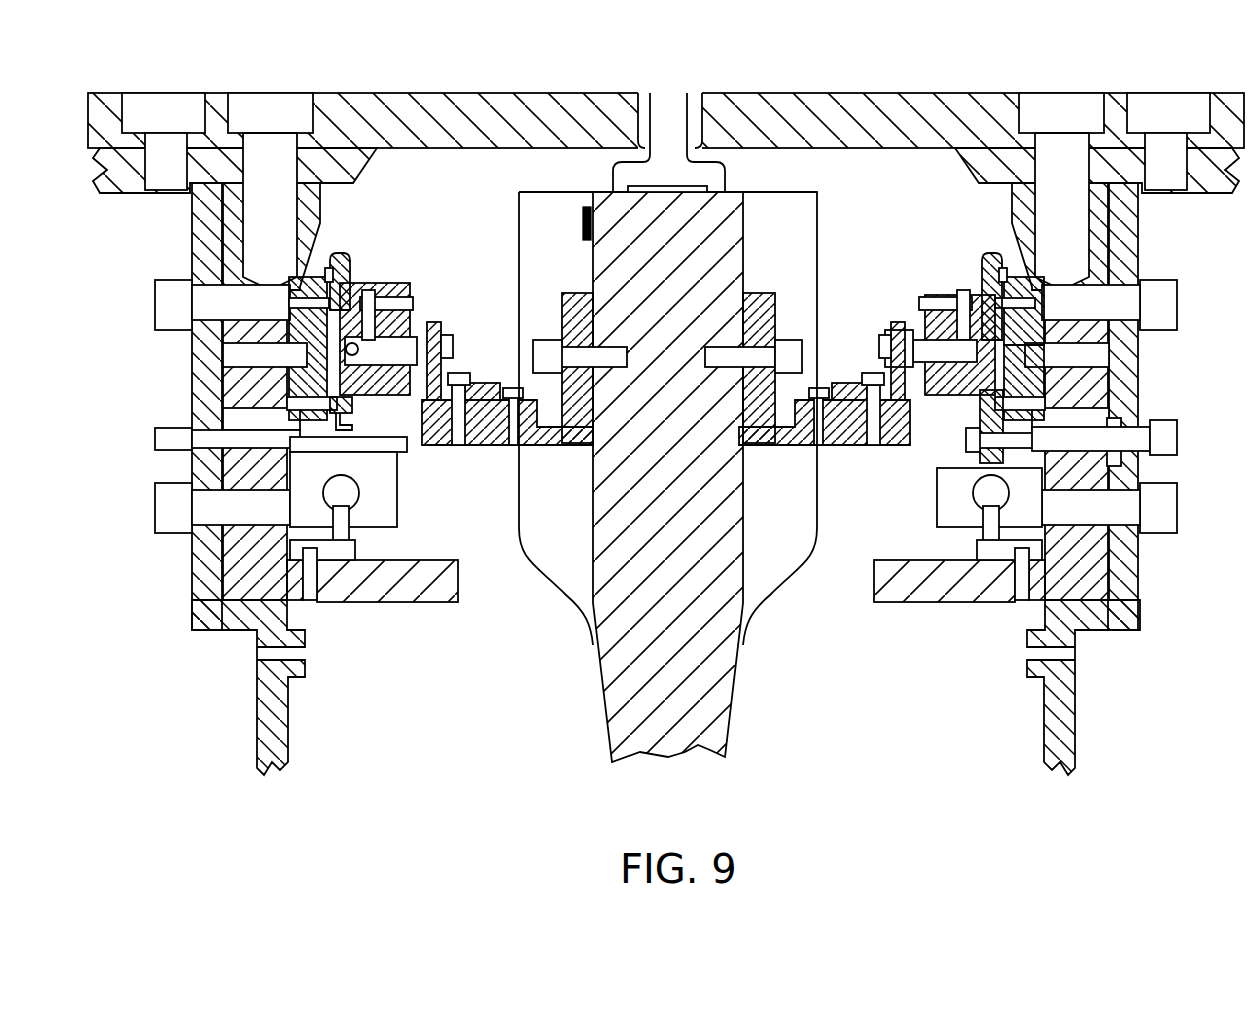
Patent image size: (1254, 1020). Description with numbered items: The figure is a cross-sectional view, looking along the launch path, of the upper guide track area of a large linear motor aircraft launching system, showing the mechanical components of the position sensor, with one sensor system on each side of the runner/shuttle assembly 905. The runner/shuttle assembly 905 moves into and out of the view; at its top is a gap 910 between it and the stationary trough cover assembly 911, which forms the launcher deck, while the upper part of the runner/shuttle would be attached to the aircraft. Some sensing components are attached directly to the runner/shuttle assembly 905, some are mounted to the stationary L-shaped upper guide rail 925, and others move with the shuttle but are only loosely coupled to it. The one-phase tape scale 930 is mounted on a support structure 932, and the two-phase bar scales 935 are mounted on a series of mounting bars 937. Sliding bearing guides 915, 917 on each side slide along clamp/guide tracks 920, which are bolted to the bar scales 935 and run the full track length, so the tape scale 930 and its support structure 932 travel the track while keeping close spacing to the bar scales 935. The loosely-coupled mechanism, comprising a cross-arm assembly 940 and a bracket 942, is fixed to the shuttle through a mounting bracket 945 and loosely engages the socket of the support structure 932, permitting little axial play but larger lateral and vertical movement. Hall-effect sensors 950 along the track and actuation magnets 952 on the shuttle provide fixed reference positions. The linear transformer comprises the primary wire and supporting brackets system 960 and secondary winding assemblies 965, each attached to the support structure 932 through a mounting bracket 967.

The runner/shuttle assembly 905 is at (668, 86).
The gap 910 is at (638, 92).
The trough cover assembly 911 is at (453, 92).
The sliding bearing guide 915 is at (980, 263).
The sliding bearing guide 917 is at (972, 428).
The clamp/guide track 920 is at (335, 258).
The L-shaped upper guide rail 925 is at (370, 592).
The one-phase tape scale 930 is at (280, 367).
The support structure 932 is at (395, 313).
The two-phase bar scale 935 is at (285, 327).
The mounting bar 937 is at (1045, 312).
The cross-arm assembly 940 is at (918, 338).
The bracket 942 is at (467, 447).
The mounting bracket 945 is at (580, 293).
The Hall-effect sensor 950 is at (1176, 443).
The actuation magnet 952 is at (1043, 440).
The primary wire and supporting brackets system 960 is at (357, 520).
The transformer secondary winding assembly 965 is at (383, 486).
The mounting bracket 967 is at (275, 440).